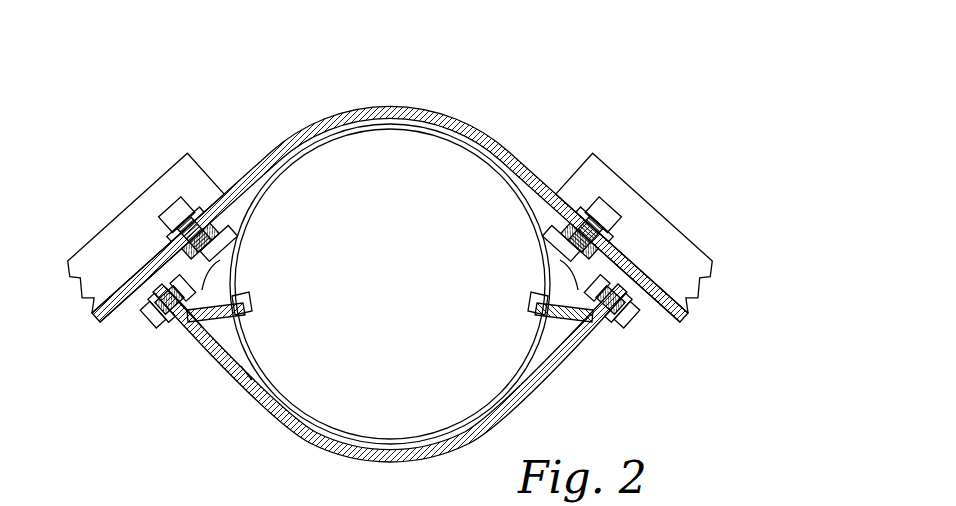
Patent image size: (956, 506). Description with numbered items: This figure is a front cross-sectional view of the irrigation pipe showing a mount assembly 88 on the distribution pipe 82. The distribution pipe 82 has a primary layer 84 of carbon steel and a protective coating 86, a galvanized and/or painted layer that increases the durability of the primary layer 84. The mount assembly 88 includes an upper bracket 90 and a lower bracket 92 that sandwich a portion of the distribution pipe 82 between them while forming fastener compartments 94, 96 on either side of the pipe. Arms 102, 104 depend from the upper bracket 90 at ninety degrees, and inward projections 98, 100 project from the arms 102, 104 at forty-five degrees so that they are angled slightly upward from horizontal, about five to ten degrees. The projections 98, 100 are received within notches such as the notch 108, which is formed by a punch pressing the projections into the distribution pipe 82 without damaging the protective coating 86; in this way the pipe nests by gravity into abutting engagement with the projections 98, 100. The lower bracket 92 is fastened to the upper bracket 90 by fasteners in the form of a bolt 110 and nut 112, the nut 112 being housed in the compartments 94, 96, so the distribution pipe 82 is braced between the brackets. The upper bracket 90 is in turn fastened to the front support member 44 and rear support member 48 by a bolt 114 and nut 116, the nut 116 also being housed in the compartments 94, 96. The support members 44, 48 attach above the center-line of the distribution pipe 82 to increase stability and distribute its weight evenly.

The front support member 44 is at (650, 227).
The rear support member 48 is at (120, 230).
The distribution pipe 82 is at (306, 403).
The primary layer 84 is at (250, 362).
The protective coating 86 is at (247, 372).
The mount assembly 88 is at (390, 260).
The upper bracket 90 is at (437, 113).
The lower bracket 92 is at (548, 383).
The fastener compartment 94 is at (208, 333).
The fastener compartment 96 is at (575, 277).
The inward projection 98 is at (234, 300).
The inward projection 100 is at (546, 292).
The arm 102 is at (88, 302).
The arm 104 is at (637, 293).
The notch 108 is at (250, 302).
The bolt 110 is at (155, 308).
The nut 112 is at (176, 318).
The bolt 114 is at (180, 213).
The nut 116 is at (232, 222).